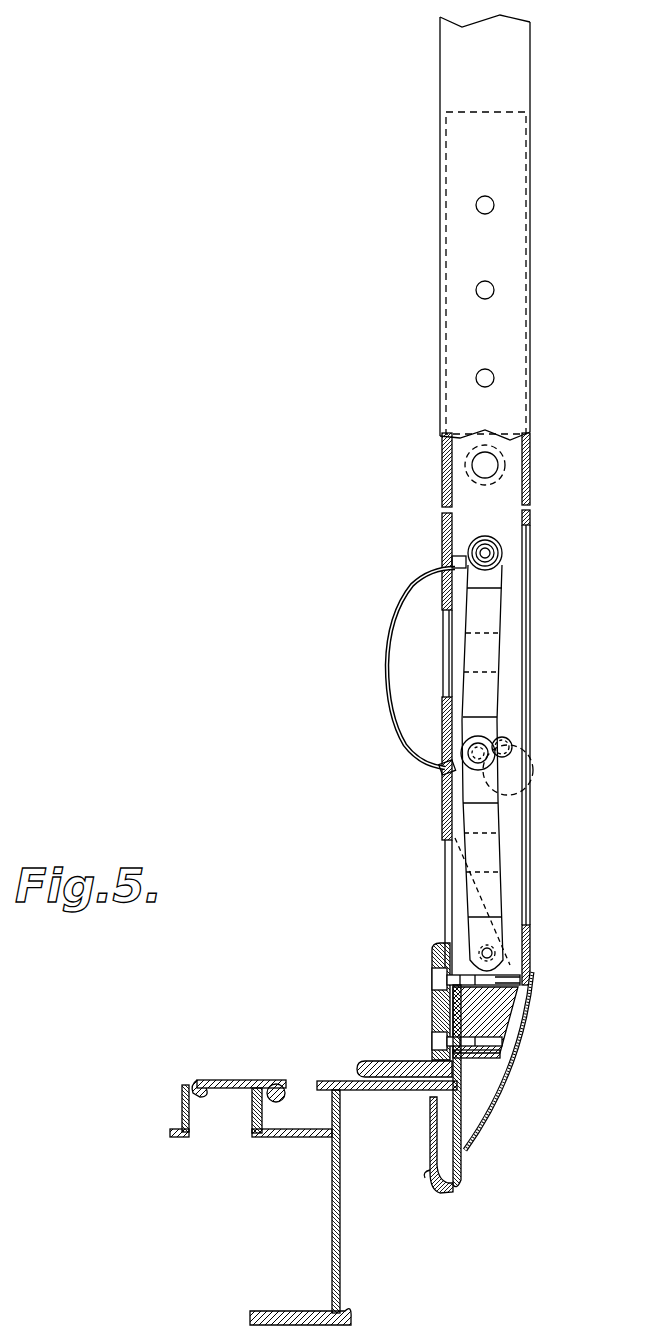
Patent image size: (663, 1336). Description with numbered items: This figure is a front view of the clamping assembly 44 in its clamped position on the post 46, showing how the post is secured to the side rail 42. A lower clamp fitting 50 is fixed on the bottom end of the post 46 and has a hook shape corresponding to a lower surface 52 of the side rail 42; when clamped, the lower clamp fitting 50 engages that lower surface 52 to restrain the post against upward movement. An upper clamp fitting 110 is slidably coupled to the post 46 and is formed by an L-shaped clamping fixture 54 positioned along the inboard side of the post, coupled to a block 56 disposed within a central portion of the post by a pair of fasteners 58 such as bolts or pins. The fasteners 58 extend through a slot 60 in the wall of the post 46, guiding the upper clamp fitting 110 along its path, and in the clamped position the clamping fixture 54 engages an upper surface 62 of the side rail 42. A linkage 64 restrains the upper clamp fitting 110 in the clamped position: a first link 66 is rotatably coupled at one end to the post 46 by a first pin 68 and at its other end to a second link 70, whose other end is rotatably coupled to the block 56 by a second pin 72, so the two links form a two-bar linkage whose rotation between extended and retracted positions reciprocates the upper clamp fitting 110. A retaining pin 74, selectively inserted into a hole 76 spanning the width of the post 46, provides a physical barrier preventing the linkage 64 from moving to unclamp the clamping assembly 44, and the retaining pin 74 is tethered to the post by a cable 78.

The side rail 42 is at (258, 1135).
The clamping assembly 44 is at (232, 728).
The post 46 is at (533, 277).
The lower clamp fitting 50 is at (462, 1170).
The lower surface 52 is at (450, 1195).
The L-shaped clamping fixture 54 is at (358, 1062).
The block 56 is at (477, 1060).
The fasteners 58 is at (432, 968).
The slot 60 is at (440, 890).
The upper surface 62 is at (317, 1082).
The linkage 64 is at (528, 748).
The first link 66 is at (497, 608).
The first pin 68 is at (500, 548).
The second link 70 is at (500, 885).
The second pin 72 is at (492, 948).
The retaining pin 74 is at (508, 744).
The hole 76 is at (510, 752).
The cable 78 is at (397, 628).
The upper clamp fitting 110 is at (408, 995).